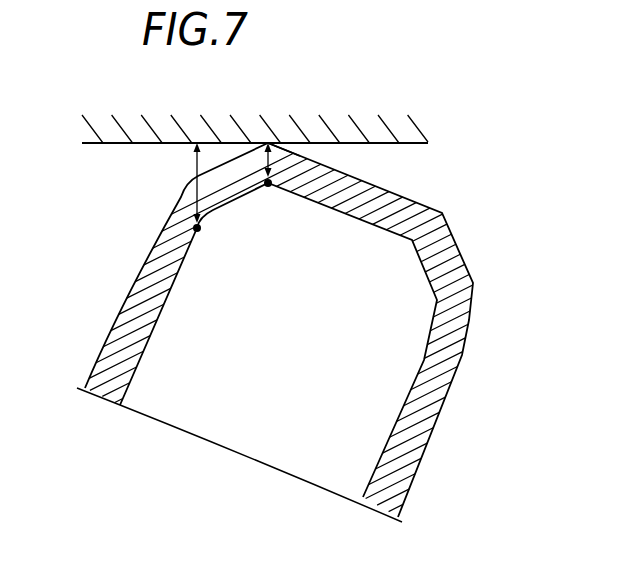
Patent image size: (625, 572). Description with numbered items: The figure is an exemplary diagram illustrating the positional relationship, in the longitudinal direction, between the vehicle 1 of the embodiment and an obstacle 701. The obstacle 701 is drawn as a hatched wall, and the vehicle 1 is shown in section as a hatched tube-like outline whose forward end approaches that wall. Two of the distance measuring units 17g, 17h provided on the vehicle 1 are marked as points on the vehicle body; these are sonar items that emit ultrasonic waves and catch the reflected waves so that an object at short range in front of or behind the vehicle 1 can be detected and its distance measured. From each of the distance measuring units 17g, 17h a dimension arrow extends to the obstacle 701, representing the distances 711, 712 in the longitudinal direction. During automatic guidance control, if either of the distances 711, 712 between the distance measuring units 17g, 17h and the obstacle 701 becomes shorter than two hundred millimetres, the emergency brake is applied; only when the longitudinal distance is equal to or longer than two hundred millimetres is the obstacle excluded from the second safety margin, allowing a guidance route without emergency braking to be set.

The vehicle 1 is at (410, 294).
The obstacle 701 is at (102, 150).
The distance 711 is at (273, 161).
The distance 712 is at (195, 161).
The distance measuring unit 17g is at (268, 188).
The distance measuring unit 17h is at (198, 233).